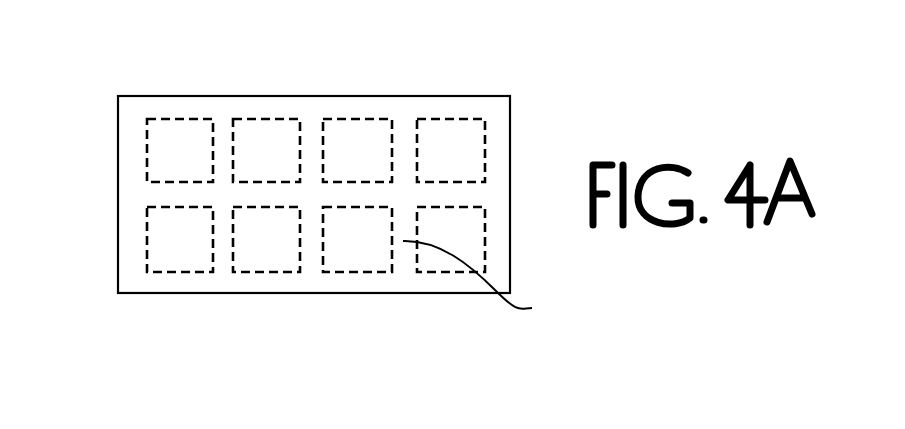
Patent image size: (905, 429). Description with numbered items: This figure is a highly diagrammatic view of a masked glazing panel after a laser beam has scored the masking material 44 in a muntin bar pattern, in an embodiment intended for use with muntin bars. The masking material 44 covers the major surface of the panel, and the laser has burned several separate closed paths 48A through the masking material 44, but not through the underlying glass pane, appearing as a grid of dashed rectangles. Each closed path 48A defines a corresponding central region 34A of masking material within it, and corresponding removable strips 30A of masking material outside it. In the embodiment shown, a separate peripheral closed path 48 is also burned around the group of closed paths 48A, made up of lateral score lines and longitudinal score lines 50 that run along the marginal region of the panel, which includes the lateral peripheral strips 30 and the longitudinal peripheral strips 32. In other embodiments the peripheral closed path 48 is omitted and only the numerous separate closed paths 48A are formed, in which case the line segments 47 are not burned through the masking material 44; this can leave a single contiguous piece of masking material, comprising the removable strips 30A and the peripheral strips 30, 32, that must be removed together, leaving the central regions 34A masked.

The lateral peripheral strip 30 is at (216, 108).
The removable strip 30A is at (497, 285).
The longitudinal peripheral strip 32 is at (405, 268).
The central region 34A is at (343, 137).
The masking material 44 is at (250, 133).
The line segment 47 is at (323, 119).
The peripheral closed path 48 is at (487, 230).
The closed path 48A is at (418, 135).
The longitudinal score line 50 is at (214, 273).